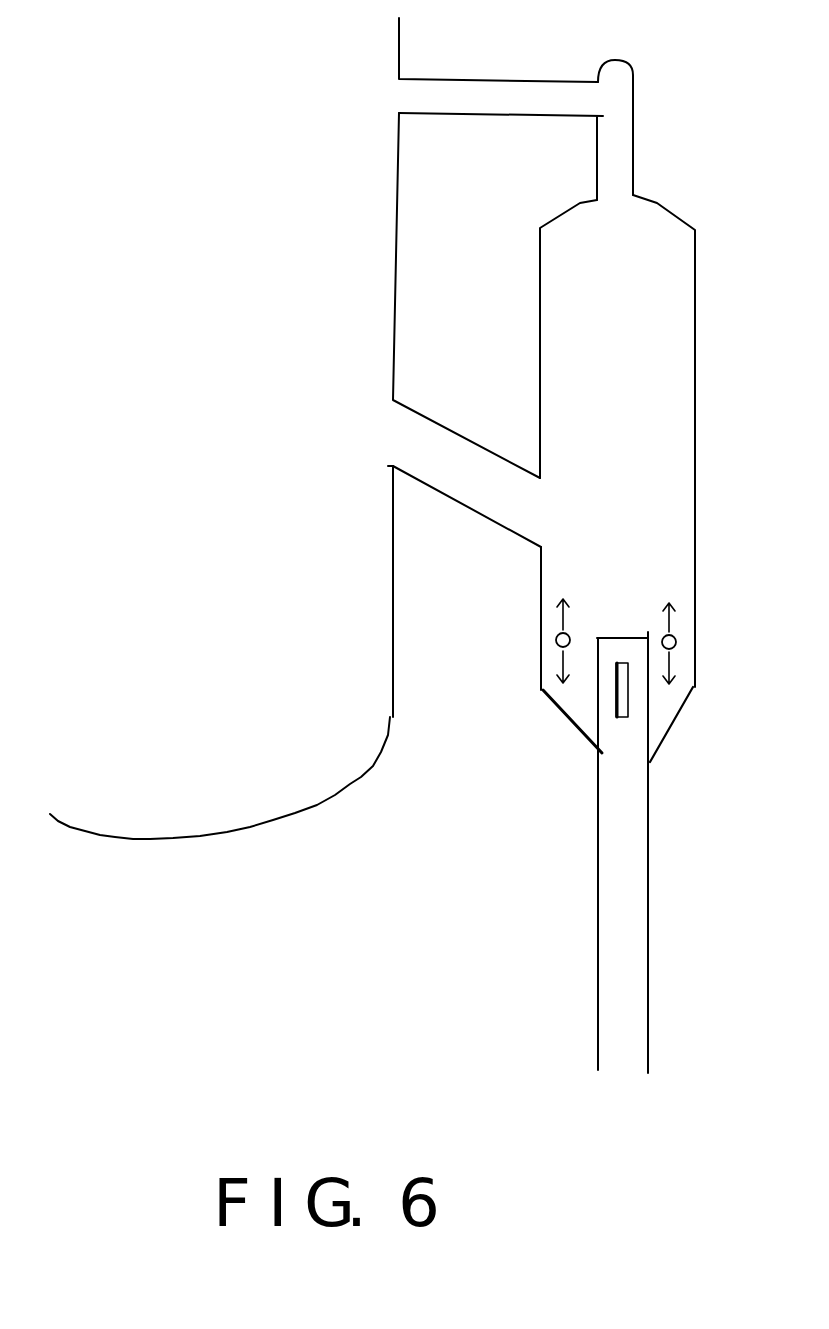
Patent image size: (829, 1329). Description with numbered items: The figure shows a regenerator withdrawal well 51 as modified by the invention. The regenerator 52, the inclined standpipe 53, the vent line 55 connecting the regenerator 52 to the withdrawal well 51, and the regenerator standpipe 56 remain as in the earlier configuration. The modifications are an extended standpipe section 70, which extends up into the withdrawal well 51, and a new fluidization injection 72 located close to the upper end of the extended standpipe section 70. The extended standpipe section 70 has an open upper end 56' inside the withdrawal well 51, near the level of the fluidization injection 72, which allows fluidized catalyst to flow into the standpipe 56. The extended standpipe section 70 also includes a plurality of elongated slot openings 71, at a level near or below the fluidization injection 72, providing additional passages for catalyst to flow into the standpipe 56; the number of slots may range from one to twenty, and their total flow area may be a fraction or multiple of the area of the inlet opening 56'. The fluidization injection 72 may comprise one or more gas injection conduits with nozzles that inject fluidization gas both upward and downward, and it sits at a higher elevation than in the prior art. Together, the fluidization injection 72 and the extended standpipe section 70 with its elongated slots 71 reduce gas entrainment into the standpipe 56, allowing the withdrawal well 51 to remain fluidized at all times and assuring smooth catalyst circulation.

The withdrawal well 51 is at (695, 458).
The regenerator 52 is at (222, 621).
The inclined standpipe 53 is at (490, 450).
The vent line 55 is at (543, 79).
The regenerator standpipe 56 is at (649, 852).
The open upper end 56' is at (625, 641).
The extended standpipe section 70 is at (652, 708).
The elongated slot openings 71 is at (618, 697).
The fluidization injection 72 is at (677, 641).